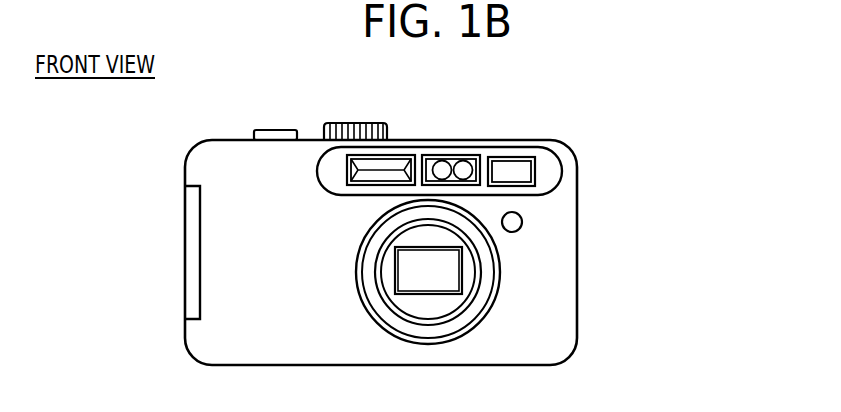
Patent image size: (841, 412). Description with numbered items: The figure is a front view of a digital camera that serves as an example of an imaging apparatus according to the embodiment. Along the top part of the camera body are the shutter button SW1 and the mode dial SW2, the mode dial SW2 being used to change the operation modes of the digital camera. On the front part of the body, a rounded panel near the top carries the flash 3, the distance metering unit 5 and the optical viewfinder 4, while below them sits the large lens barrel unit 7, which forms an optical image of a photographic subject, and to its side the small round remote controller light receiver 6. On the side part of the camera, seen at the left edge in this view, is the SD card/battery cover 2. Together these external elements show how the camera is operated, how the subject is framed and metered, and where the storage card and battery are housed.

The shutter button SW1 is at (279, 128).
The mode dial SW2 is at (350, 123).
The SD card/battery cover 2 is at (192, 222).
The flash 3 is at (392, 165).
The optical viewfinder 4 is at (513, 172).
The distance metering unit 5 is at (453, 177).
The remote controller light receiver 6 is at (522, 222).
The lens barrel unit 7 is at (428, 305).